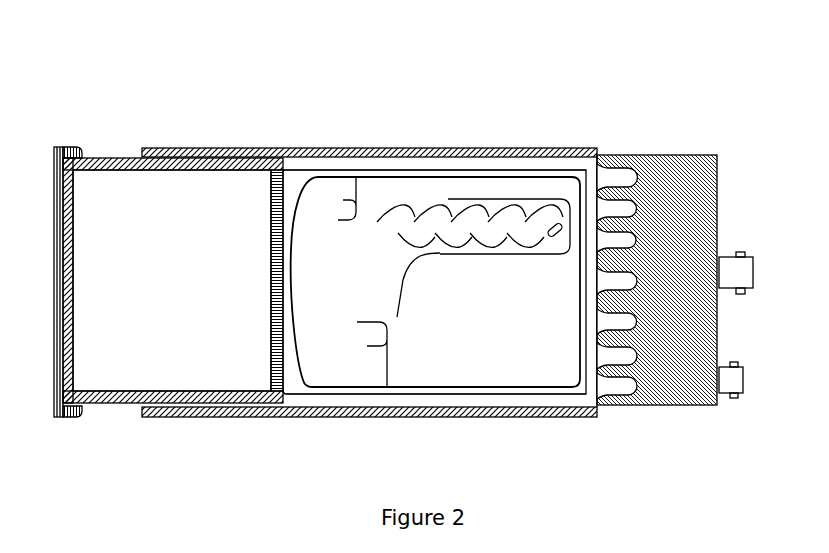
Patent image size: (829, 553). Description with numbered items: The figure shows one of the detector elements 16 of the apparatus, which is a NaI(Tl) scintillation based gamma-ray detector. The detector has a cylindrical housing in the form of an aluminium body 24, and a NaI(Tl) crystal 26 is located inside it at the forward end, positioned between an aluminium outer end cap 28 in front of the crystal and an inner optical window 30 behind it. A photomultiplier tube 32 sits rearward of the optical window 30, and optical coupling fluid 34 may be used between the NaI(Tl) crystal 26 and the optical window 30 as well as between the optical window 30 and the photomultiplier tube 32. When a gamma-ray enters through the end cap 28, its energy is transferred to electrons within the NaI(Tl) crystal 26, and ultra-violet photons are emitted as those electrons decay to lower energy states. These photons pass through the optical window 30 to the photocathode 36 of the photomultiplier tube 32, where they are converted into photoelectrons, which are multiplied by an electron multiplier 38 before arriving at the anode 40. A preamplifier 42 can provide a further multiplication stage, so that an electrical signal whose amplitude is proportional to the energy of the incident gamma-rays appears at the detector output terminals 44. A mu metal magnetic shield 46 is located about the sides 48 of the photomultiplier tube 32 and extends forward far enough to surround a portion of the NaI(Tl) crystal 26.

The detector element 16 is at (106, 40).
The aluminium body 24 is at (105, 410).
The NaI(Tl) crystal 26 is at (116, 209).
The aluminium outer end cap 28 is at (65, 145).
The inner optical window 30 is at (284, 148).
The photomultiplier tube 32 is at (357, 176).
The optical coupling fluid 34 is at (286, 402).
The photocathode 36 is at (343, 374).
The electron multiplier 38 is at (492, 199).
The anode 40 is at (557, 224).
The preamplifier 42 is at (644, 155).
The detector output terminals 44 is at (745, 376).
The mu metal magnetic shield 46 is at (198, 148).
The sides of the photomultiplier tube 48 is at (419, 157).